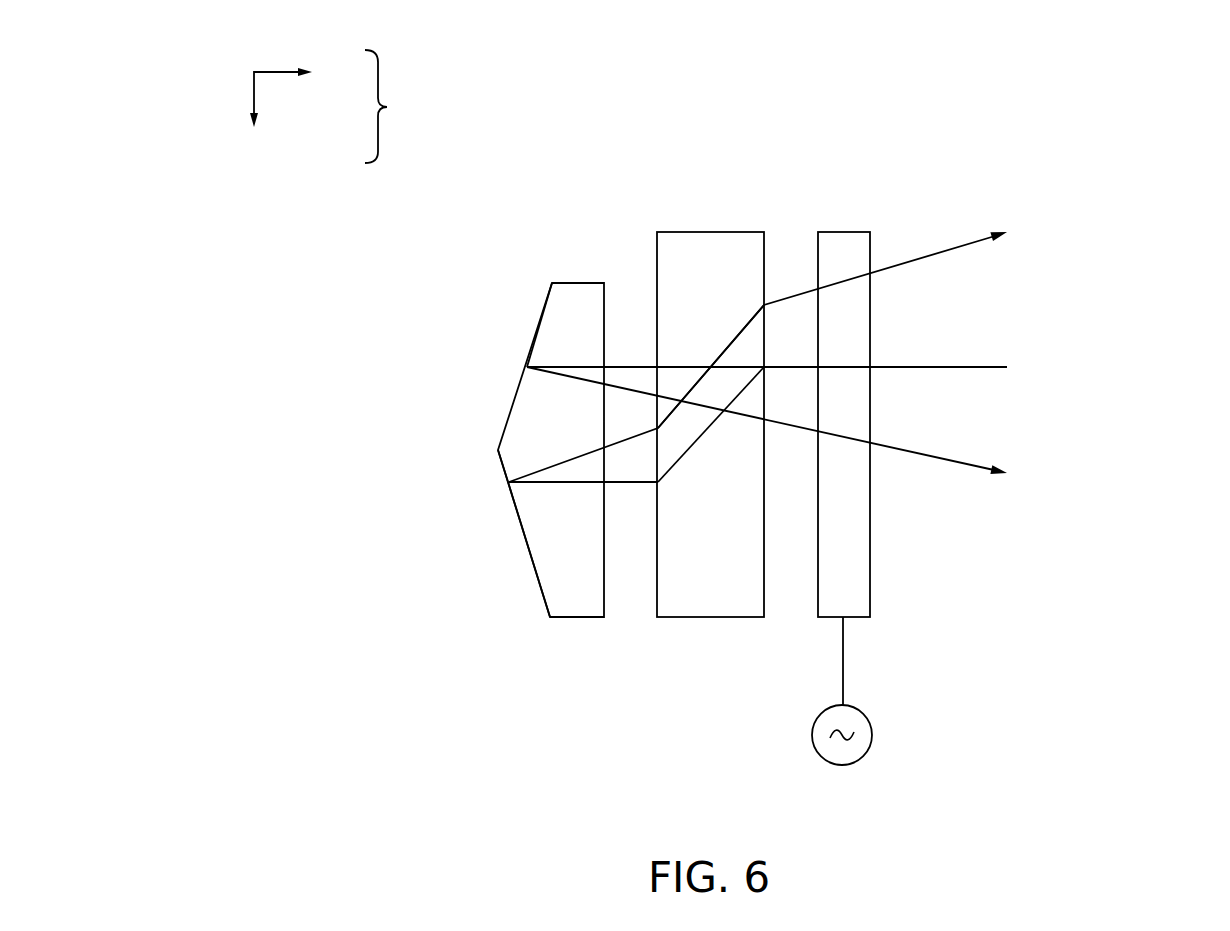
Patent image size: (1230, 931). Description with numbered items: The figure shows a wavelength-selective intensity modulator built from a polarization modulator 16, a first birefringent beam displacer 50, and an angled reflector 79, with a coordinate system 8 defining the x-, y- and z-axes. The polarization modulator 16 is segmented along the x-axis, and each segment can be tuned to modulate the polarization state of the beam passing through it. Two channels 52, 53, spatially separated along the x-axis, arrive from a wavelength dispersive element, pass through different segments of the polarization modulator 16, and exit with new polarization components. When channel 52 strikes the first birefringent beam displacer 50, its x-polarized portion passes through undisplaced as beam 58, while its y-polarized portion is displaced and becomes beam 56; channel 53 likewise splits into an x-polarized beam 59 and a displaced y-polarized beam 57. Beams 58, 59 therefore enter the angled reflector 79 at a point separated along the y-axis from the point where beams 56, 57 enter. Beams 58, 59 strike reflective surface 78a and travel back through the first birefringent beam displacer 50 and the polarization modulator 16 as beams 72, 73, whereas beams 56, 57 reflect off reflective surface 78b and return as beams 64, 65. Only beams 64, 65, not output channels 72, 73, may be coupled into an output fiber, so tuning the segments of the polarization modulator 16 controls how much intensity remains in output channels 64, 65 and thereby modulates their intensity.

The coordinate system 8 is at (329, 107).
The polarization modulator 16 is at (847, 241).
The first birefringent beam displacer 50 is at (717, 241).
The channel 52 is at (872, 368).
The channel 53 is at (1038, 367).
The beam 56 is at (636, 451).
The beam 57 is at (700, 437).
The beam 58 is at (752, 366).
The beam 59 is at (742, 367).
The output channel 64 is at (794, 350).
The output channel 65 is at (794, 350).
The output channel 72 is at (803, 430).
The output channel 73 is at (803, 430).
The reflective surface 78a is at (527, 367).
The reflective surface 78b is at (520, 518).
The angled reflector 79 is at (578, 288).